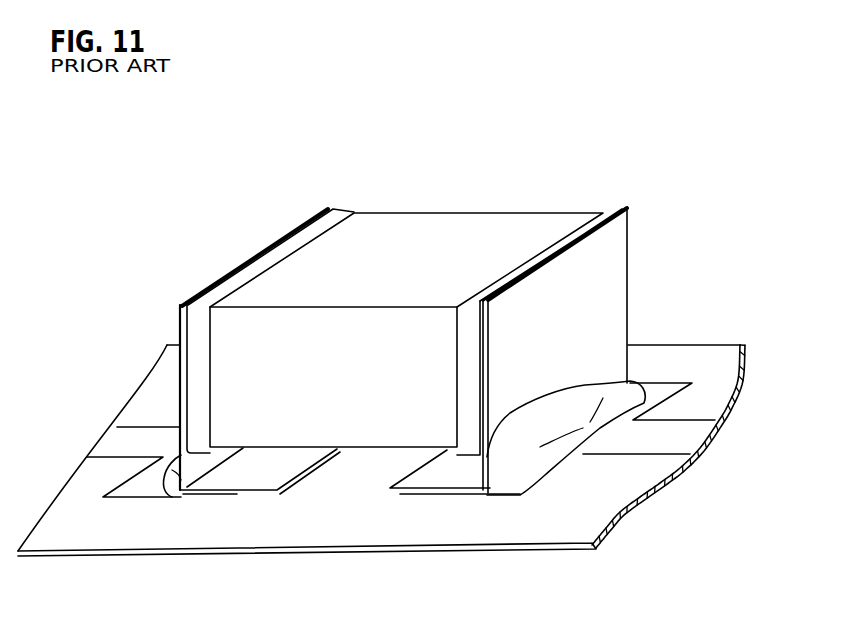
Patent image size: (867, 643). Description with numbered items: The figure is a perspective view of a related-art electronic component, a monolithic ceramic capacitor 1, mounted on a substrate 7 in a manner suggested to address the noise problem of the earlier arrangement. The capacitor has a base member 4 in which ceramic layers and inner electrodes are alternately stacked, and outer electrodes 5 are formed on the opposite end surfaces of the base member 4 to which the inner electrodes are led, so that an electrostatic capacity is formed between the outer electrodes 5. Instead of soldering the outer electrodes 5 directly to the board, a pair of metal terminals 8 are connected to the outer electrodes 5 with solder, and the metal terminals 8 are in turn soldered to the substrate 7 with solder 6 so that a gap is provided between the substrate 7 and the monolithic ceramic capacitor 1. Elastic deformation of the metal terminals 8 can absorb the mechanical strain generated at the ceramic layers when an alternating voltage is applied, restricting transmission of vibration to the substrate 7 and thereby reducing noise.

The monolithic ceramic capacitor 1 is at (422, 193).
The base member 4 is at (475, 228).
The outer electrodes 5 is at (340, 210).
The solder 6 is at (650, 378).
The substrate 7 is at (435, 527).
The metal terminals 8 is at (607, 278).